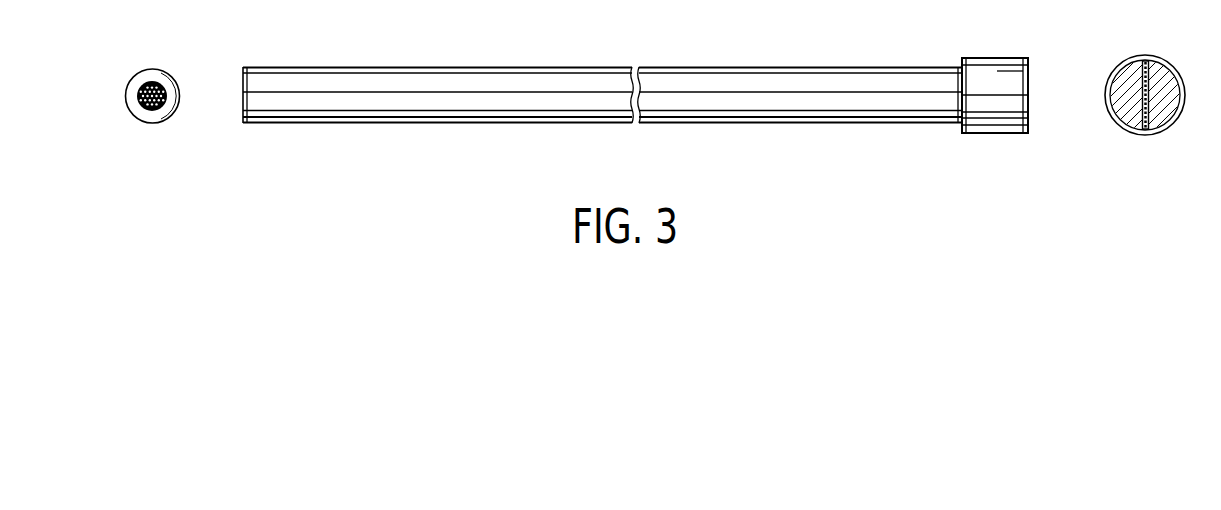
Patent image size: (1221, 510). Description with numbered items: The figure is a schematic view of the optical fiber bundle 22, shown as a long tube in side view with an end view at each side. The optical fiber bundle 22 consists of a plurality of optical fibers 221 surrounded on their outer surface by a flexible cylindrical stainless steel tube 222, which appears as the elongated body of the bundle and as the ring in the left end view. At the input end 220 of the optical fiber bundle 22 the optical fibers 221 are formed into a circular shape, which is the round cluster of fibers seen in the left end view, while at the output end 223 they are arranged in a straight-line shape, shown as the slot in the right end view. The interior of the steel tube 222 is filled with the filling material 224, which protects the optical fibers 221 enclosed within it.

The optical fiber bundle 22 is at (636, 106).
The input end 220 is at (241, 120).
The optical fibers 221 is at (162, 82).
The flexible cylindrical stainless steel tube 222 is at (159, 118).
The output end 223 is at (1028, 80).
The filling material 224 is at (1162, 120).